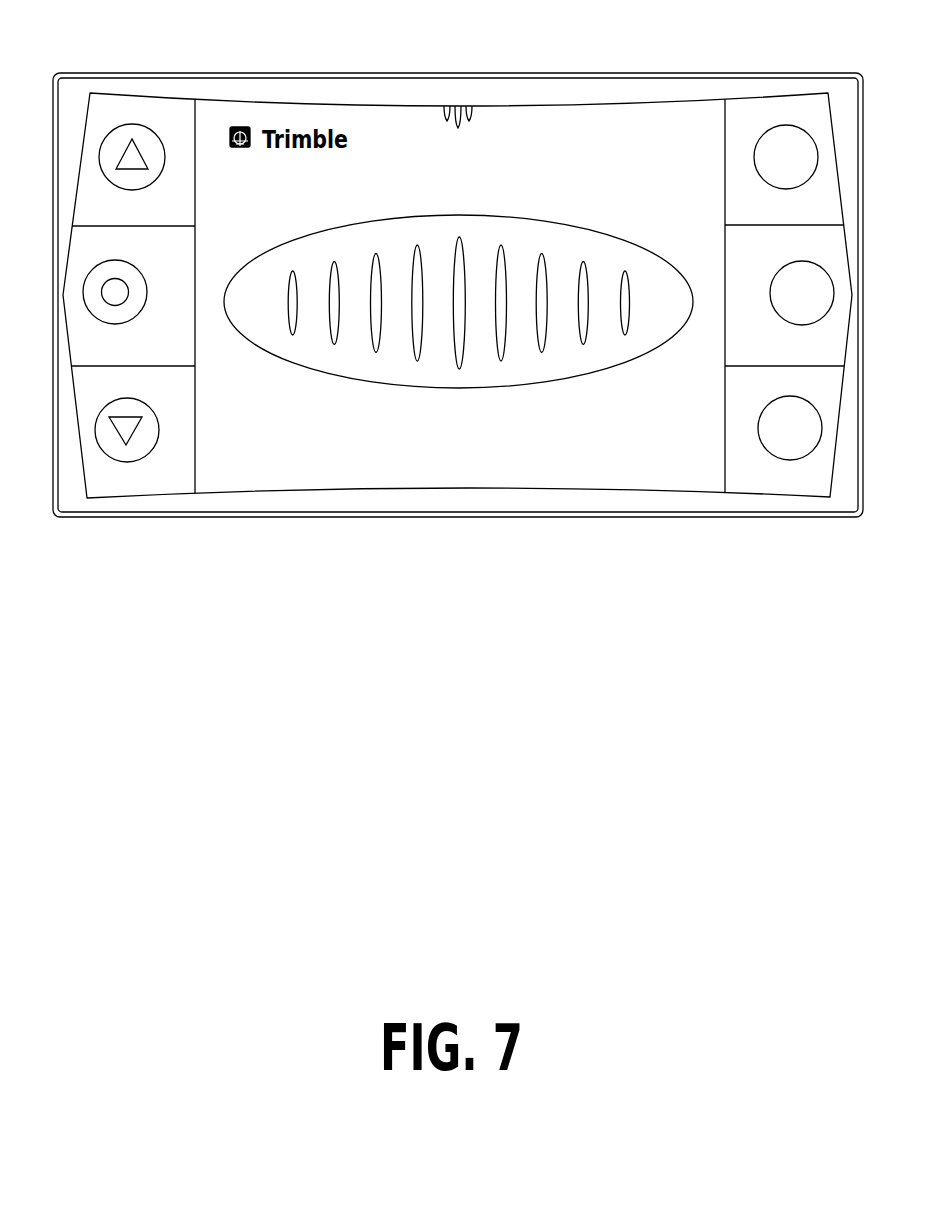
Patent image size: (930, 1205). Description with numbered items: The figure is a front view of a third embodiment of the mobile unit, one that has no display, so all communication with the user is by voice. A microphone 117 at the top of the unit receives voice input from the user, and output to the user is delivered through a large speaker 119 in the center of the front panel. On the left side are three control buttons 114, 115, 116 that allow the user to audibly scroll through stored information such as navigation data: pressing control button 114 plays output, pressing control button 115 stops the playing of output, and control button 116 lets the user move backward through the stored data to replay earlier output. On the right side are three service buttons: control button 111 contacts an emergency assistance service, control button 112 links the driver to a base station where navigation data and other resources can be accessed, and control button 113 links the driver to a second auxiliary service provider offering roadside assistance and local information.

The control button 111 is at (772, 190).
The control button 112 is at (770, 308).
The control button 113 is at (768, 453).
The control button 114 is at (151, 190).
The control button 115 is at (148, 308).
The control button 116 is at (152, 455).
The microphone 117 is at (460, 72).
The speaker 119 is at (459, 390).